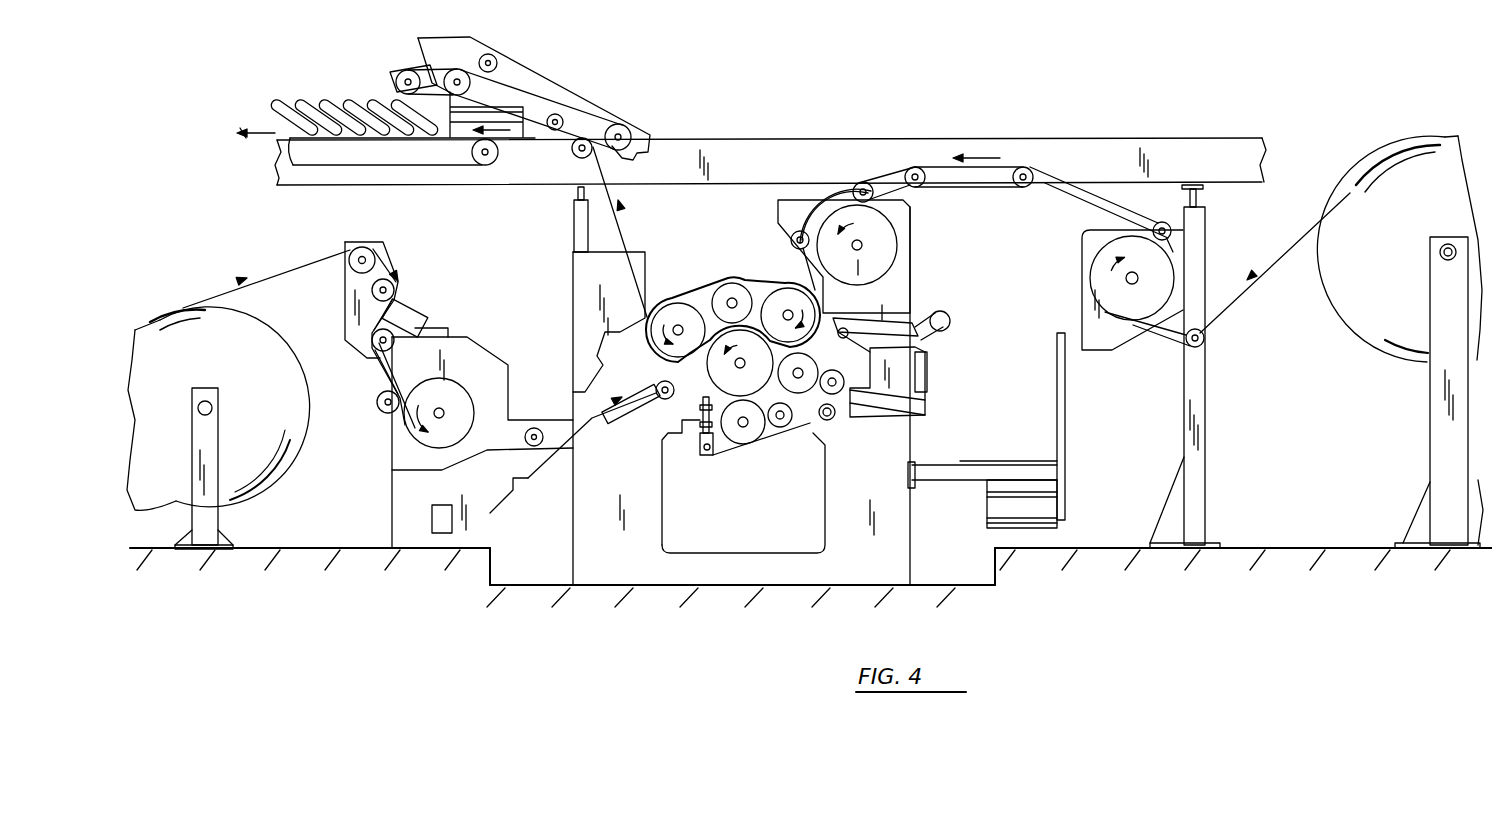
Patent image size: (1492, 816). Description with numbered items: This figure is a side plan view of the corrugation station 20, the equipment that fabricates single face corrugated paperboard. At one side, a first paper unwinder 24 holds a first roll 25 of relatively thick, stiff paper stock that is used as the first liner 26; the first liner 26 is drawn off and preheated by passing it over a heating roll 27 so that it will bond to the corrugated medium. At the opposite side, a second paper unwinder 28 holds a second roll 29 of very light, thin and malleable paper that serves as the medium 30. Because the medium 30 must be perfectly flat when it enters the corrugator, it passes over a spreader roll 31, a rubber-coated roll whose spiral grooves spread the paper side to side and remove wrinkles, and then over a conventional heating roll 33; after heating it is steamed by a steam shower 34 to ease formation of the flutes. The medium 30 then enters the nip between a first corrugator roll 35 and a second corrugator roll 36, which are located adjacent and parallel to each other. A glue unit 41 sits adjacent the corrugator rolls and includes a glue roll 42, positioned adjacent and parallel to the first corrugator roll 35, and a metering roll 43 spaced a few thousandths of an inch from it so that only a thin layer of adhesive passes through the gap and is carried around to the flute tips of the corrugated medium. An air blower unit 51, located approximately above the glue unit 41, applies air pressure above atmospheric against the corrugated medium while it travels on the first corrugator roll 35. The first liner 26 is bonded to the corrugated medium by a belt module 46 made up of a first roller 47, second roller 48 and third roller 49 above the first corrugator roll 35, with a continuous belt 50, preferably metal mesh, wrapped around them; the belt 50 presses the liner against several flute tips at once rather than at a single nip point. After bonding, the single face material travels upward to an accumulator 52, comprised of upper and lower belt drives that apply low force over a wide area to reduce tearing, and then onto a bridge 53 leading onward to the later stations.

The corrugation station 20 is at (772, 88).
The first paper unwinder 24 is at (1430, 449).
The first roll 25 is at (1388, 350).
The first liner 26 is at (1311, 231).
The heating roll 27 is at (908, 237).
The second paper unwinder 28 is at (205, 522).
The second roll 29 is at (292, 462).
The medium 30 is at (289, 270).
The spreader roll 31 is at (350, 277).
The heating roll 33 is at (453, 380).
The steam shower 34 is at (617, 430).
The first corrugator roll 35 is at (722, 378).
The second corrugator roll 36 is at (743, 434).
The glue unit 41 is at (808, 414).
The glue roll 42 is at (807, 379).
The metering roll 43 is at (841, 389).
The belt module 46 is at (733, 286).
The first roller 47 is at (668, 313).
The second roller 48 is at (731, 286).
The third roller 49 is at (806, 290).
The continuous belt 50 is at (761, 282).
The air blower unit 51 is at (825, 368).
The accumulator 52 is at (560, 86).
The bridge 53 is at (302, 97).